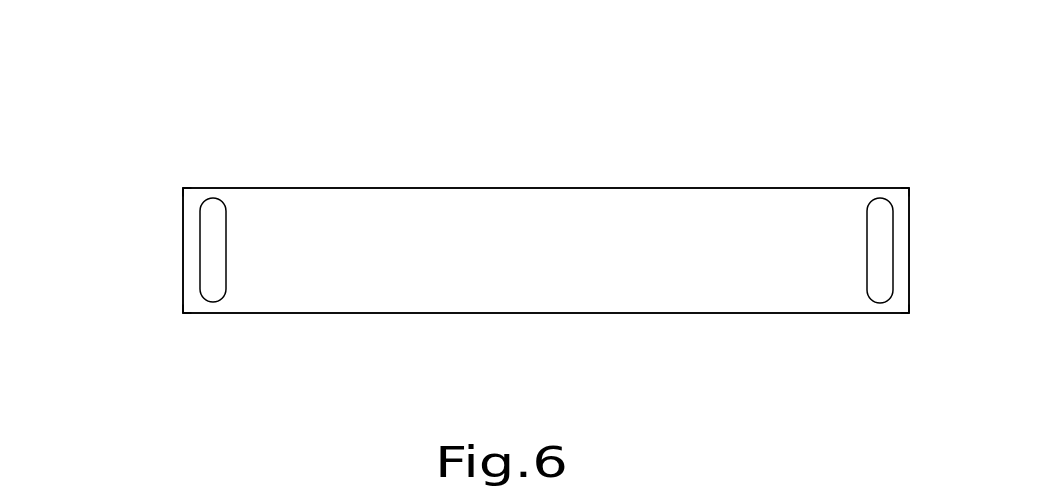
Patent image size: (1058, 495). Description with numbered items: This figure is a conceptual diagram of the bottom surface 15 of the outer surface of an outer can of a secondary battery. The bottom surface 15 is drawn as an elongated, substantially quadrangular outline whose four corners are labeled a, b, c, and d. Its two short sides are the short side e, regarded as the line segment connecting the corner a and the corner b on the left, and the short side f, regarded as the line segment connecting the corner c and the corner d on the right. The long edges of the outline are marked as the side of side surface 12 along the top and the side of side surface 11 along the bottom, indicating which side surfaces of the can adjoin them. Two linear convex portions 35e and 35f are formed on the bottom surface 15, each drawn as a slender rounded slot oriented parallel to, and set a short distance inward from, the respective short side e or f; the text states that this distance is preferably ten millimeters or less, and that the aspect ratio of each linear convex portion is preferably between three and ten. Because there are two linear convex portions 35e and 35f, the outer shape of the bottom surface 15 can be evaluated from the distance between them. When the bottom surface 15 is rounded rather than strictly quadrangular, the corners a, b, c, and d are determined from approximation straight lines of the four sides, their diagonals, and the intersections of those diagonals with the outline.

The bottom surface 15 is at (82, 157).
The linear convex portion 35e is at (205, 198).
The linear convex portion 35f is at (883, 198).
The side surface 12 is at (645, 117).
The side surface 11 is at (645, 367).
The corner a is at (183, 188).
The corner b is at (183, 313).
The corner c is at (909, 188).
The corner d is at (909, 313).
The short side e is at (183, 252).
The short side f is at (909, 248).